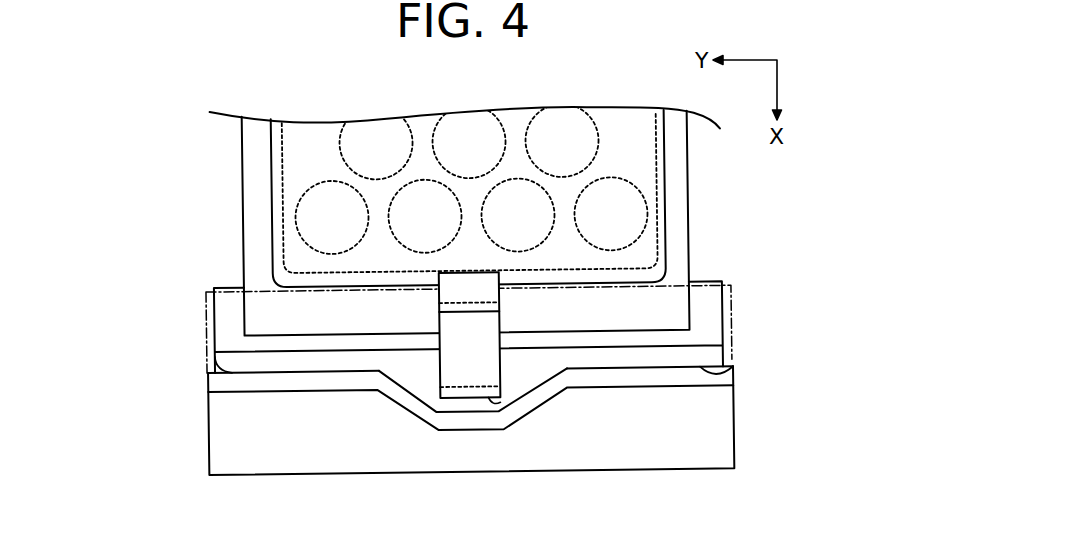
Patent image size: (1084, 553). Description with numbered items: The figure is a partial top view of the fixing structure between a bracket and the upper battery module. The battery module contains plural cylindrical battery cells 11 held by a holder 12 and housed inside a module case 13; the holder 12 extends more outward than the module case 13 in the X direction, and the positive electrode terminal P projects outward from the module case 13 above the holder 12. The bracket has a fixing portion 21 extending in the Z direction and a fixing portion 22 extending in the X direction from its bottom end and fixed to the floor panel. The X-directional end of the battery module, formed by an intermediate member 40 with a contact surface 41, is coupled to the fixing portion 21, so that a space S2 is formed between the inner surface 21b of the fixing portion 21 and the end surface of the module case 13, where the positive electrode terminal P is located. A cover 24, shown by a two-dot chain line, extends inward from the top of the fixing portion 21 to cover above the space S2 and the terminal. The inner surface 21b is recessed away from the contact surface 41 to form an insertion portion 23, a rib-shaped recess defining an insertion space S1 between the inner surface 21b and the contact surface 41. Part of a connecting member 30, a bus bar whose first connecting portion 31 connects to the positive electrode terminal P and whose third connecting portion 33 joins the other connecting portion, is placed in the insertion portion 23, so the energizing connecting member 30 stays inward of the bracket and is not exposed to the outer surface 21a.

The battery cell 11 is at (365, 157).
The holder 12 is at (691, 203).
The module case 13 is at (666, 165).
The fixing portion 21 is at (434, 436).
The outer surface 21a is at (230, 393).
The inner surface 21b is at (434, 436).
The fixing portion 22 is at (220, 452).
The insertion portion 23 is at (458, 423).
The cover 24 is at (733, 293).
The connecting member 30 is at (482, 393).
The first connecting portion 31 is at (486, 323).
The third connecting portion 33 is at (551, 414).
The intermediate member 40 is at (724, 322).
The contact surface 41 is at (735, 370).
The insertion space S1 is at (493, 405).
The space S2 is at (271, 329).
The positive electrode terminal P is at (440, 299).